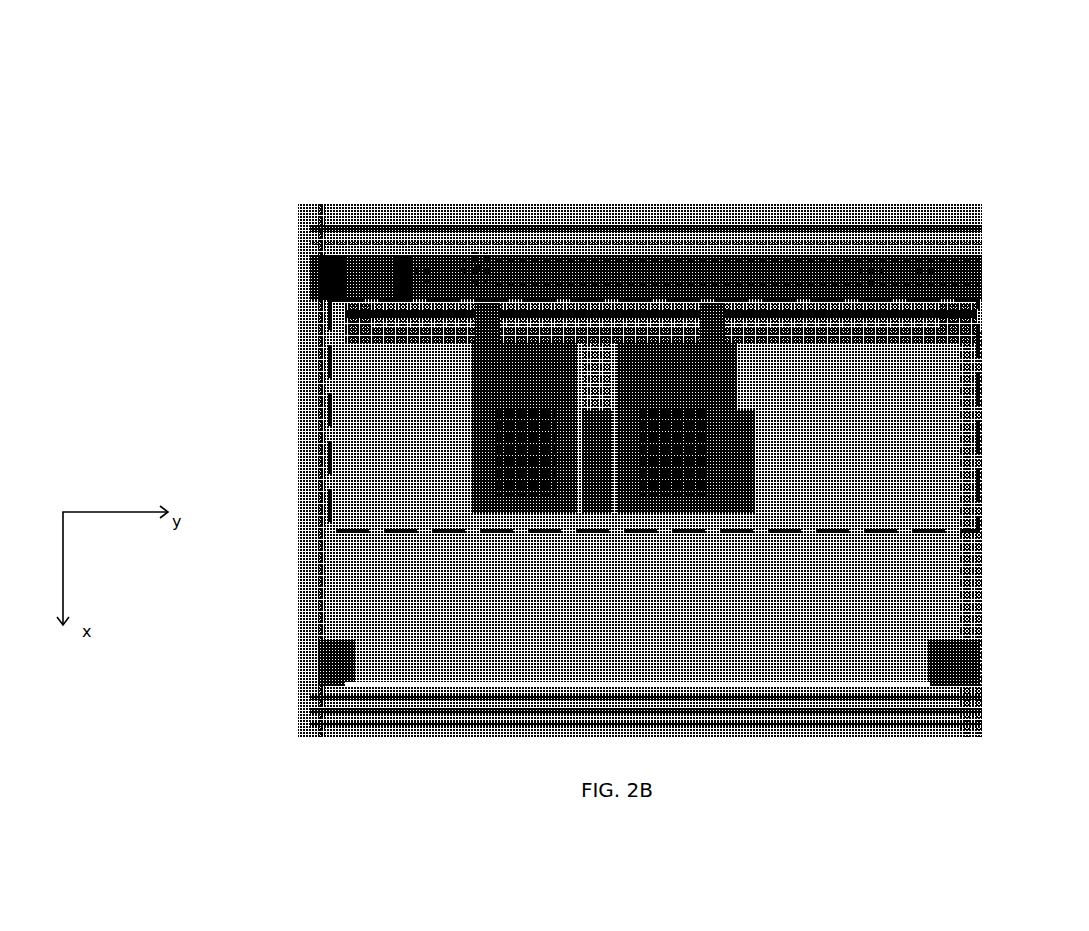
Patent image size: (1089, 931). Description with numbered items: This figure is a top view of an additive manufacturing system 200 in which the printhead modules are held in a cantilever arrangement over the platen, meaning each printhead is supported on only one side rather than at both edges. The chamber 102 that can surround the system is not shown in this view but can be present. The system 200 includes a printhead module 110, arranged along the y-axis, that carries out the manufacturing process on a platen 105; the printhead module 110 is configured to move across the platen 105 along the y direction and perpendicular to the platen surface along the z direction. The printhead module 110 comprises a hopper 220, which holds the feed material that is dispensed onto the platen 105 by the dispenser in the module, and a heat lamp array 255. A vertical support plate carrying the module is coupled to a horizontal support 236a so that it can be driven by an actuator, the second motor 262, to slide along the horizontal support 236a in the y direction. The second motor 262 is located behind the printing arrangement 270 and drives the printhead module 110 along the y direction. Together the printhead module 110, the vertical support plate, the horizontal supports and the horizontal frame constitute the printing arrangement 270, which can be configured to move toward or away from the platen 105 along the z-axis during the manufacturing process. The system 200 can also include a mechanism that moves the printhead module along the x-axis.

The additive manufacturing system 200 is at (398, 118).
The chamber 102 is at (917, 223).
The platen 105 is at (935, 603).
The second motor 262 is at (400, 268).
The horizontal support 236a is at (922, 323).
The hopper 220 is at (698, 415).
The heat lamp array 255 is at (740, 460).
The printhead module 110 is at (482, 473).
The printing arrangement 270 is at (990, 398).